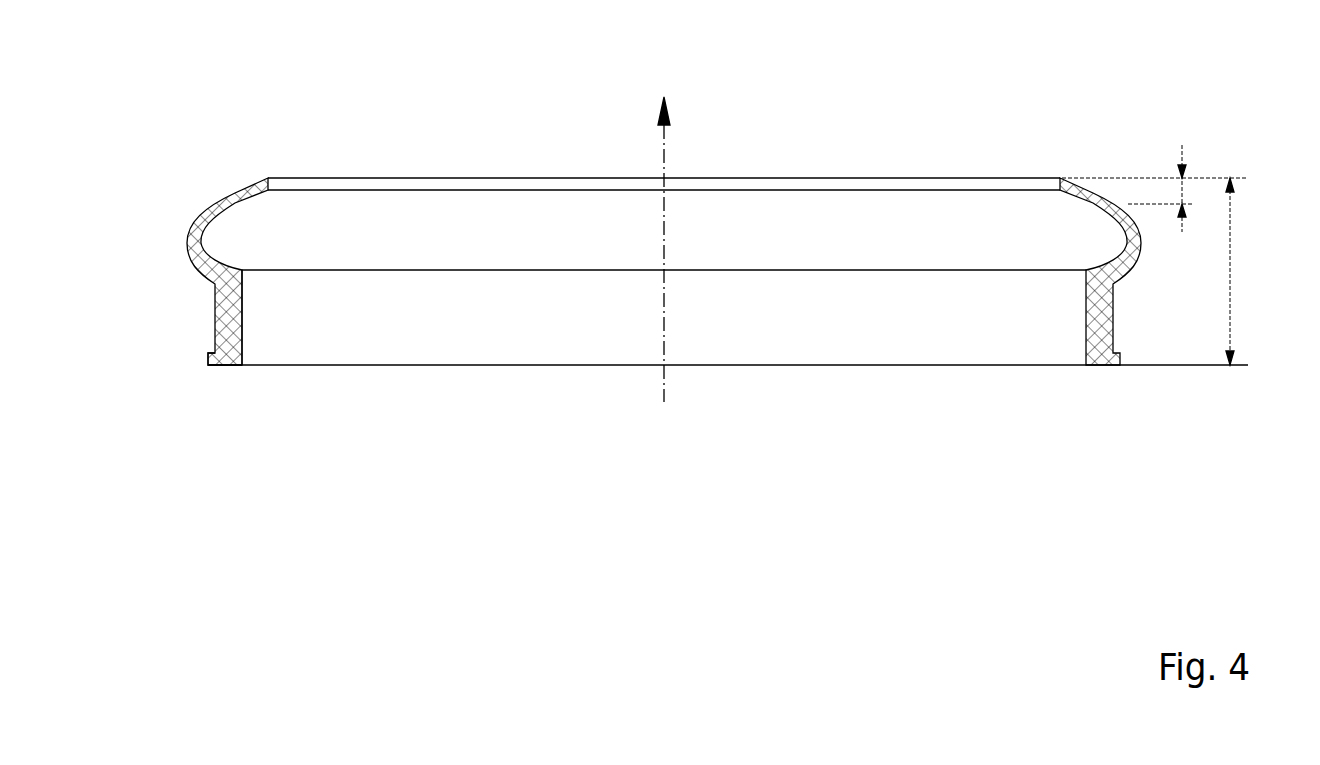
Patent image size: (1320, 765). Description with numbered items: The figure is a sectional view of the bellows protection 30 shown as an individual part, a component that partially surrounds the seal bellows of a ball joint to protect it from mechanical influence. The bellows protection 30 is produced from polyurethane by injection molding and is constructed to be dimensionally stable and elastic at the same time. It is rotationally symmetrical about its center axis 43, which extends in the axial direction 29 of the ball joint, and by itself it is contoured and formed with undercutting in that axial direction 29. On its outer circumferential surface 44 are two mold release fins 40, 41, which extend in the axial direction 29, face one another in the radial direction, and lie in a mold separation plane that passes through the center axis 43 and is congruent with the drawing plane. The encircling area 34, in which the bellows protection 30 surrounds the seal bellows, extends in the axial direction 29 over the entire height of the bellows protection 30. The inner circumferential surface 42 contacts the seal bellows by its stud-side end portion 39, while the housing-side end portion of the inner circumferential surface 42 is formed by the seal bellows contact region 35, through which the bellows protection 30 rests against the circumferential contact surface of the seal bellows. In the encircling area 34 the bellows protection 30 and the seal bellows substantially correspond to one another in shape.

The axial direction 29 is at (664, 150).
The bellows protection 30 is at (670, 256).
The encircling area 34 is at (1230, 273).
The seal bellows contact region 35 is at (252, 300).
The stud-side end portion 39 is at (1182, 190).
The mold release fin 40 is at (213, 292).
The mold release fin 41 is at (1124, 331).
The inner circumferential surface 42 is at (253, 198).
The center axis 43 is at (666, 383).
The outer circumferential surface 44 is at (216, 328).